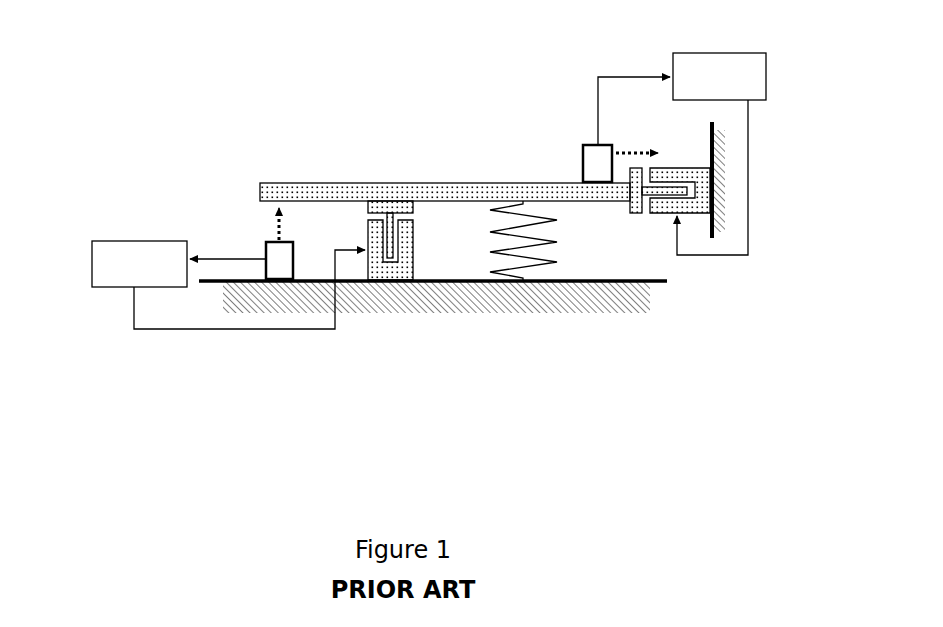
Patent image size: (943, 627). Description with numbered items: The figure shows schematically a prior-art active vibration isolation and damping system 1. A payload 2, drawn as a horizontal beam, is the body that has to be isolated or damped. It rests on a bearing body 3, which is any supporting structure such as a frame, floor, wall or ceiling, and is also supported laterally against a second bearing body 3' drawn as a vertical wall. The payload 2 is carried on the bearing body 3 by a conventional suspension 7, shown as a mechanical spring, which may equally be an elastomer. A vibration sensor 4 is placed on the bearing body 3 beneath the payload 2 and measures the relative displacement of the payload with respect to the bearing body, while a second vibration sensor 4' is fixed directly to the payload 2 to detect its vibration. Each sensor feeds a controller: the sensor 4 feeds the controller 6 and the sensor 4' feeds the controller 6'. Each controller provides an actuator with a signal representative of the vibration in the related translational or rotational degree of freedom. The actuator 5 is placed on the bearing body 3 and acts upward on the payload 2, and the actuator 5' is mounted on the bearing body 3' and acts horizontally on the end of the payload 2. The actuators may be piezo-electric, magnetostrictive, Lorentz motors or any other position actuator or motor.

The vibration isolation / actuator system 1 is at (126, 93).
The payload 2 is at (256, 192).
The bearing body 3 is at (433, 344).
The vibration sensor 4 is at (244, 292).
The actuator 5 is at (405, 240).
The controller 6 is at (207, 278).
The conventional suspension 7 is at (554, 258).
The vibration sensor 4' is at (606, 129).
The actuator 5' is at (667, 212).
The controller 6' is at (735, 147).
The bearing body 3' is at (721, 220).